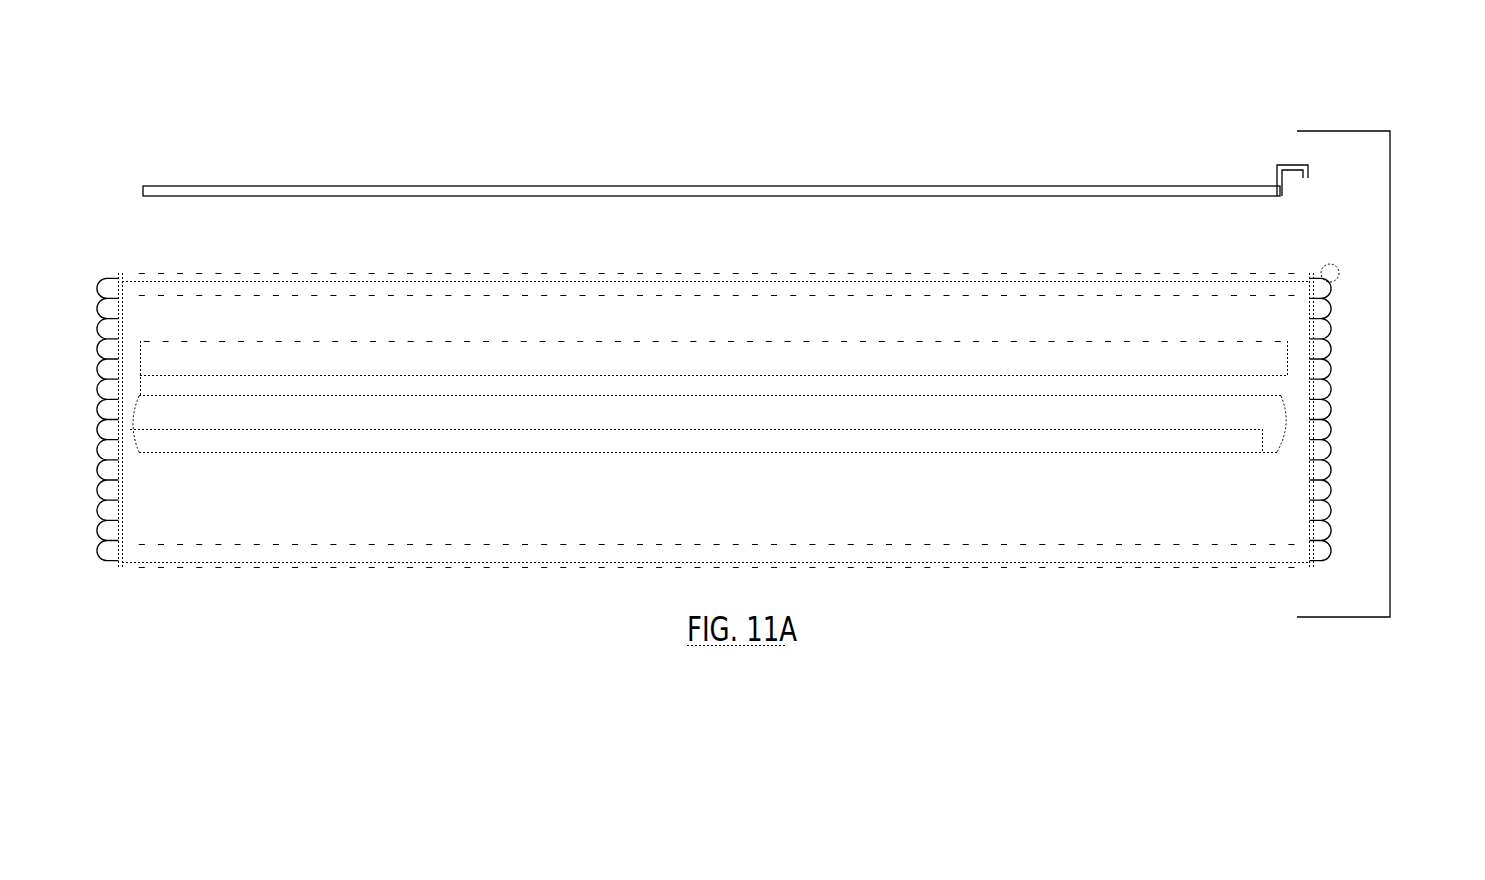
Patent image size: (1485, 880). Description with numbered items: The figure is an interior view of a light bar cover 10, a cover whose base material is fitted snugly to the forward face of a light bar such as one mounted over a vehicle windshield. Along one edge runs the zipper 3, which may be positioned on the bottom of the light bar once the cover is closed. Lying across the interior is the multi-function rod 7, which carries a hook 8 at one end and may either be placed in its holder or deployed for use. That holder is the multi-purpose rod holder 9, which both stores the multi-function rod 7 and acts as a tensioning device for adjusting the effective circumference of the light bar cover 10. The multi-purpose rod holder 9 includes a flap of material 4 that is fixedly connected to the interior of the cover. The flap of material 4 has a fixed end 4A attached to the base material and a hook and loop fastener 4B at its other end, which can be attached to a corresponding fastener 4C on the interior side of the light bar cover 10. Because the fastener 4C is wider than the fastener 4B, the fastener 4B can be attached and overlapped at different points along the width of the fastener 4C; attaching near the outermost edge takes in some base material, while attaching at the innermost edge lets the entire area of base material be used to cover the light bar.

The zipper 3 is at (1293, 268).
The flap of material 4 is at (1113, 418).
The fixed end 4A is at (1283, 410).
The hook and loop fastener 4B is at (824, 438).
The corresponding fastener 4C is at (589, 362).
The multi-function rod 7 is at (841, 187).
The hook 8 is at (1278, 168).
The multi-purpose rod holder 9 is at (1197, 380).
The light bar cover 10 is at (375, 612).